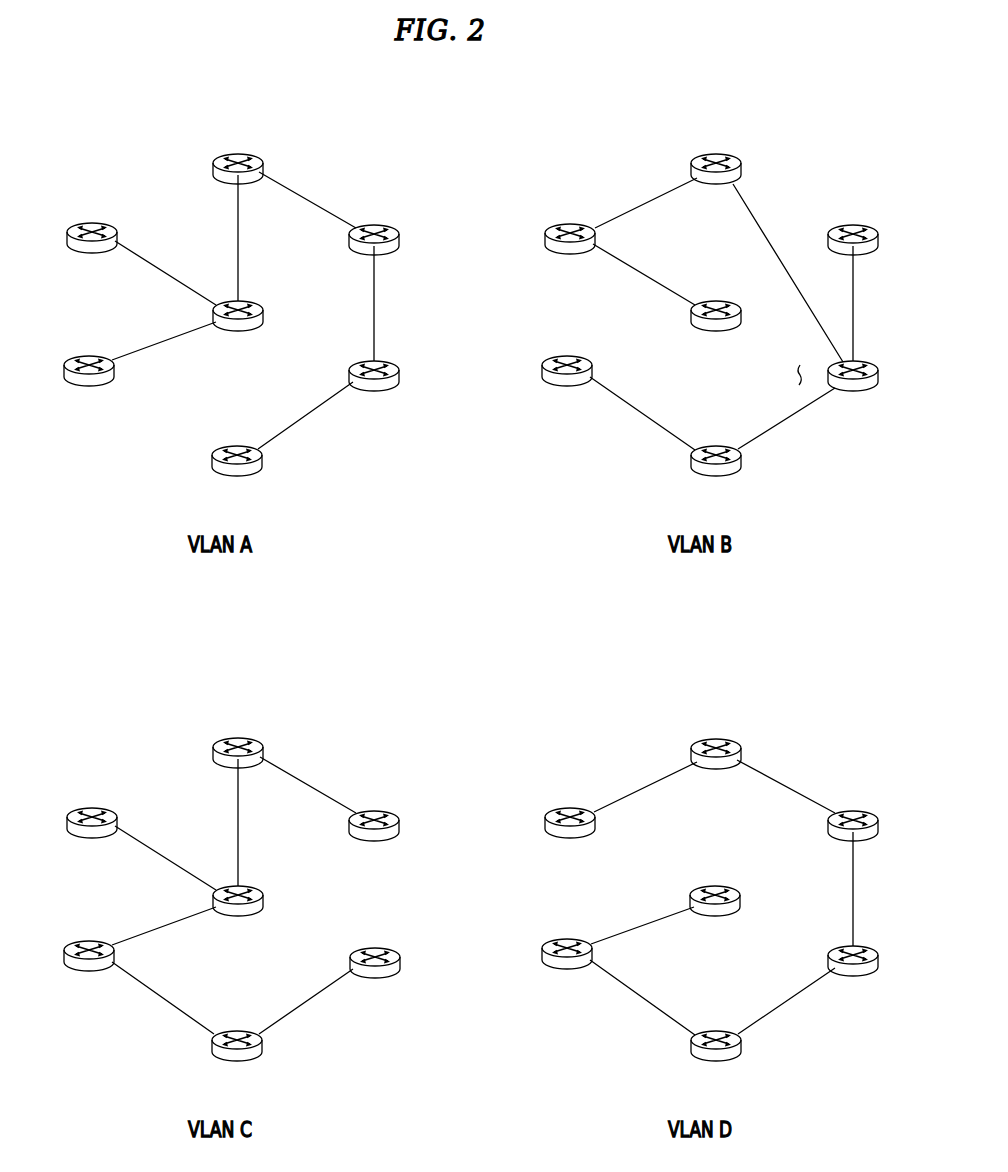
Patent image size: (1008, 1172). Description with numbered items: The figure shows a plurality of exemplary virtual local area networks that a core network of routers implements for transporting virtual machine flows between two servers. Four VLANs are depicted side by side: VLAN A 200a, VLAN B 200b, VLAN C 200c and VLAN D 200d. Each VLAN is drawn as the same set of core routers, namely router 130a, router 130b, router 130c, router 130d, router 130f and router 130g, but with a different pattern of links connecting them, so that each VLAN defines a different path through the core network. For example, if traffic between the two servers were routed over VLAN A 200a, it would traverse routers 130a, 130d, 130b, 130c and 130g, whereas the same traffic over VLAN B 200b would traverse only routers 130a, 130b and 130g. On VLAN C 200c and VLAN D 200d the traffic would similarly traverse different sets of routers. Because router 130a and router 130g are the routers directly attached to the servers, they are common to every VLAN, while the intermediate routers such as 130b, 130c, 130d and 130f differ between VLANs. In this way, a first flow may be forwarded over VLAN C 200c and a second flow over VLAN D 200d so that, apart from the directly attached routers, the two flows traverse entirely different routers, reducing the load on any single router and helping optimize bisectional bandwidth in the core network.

The VLAN A 200a is at (80, 150).
The VLAN B 200b is at (555, 150).
The VLAN C 200c is at (69, 735).
The VLAN D 200d is at (562, 735).
The router 130a is at (320, 553).
The router 130b is at (466, 484).
The router 130c is at (603, 555).
The router 130d is at (399, 660).
The router 130f is at (471, 777).
The router 130g is at (611, 692).